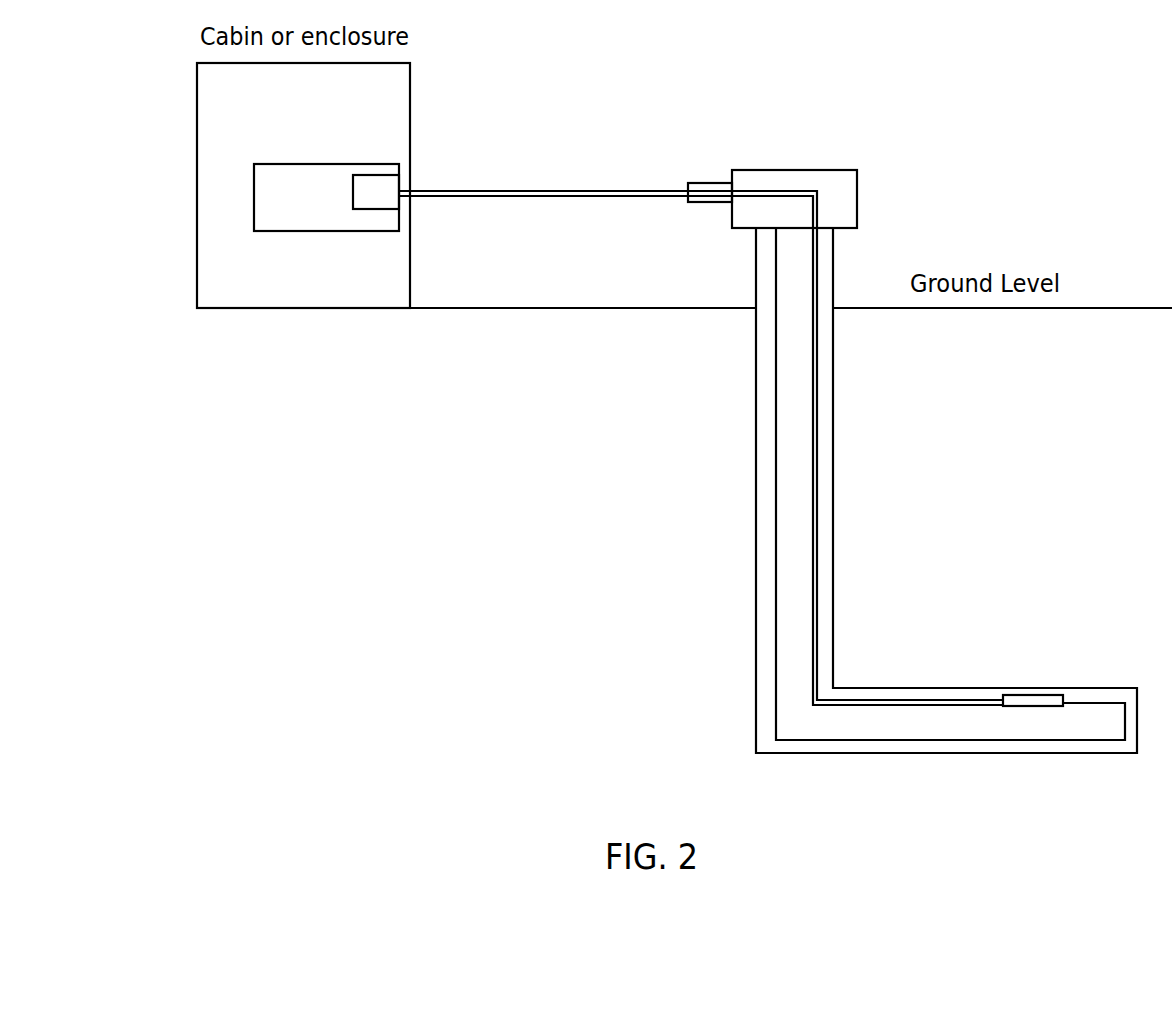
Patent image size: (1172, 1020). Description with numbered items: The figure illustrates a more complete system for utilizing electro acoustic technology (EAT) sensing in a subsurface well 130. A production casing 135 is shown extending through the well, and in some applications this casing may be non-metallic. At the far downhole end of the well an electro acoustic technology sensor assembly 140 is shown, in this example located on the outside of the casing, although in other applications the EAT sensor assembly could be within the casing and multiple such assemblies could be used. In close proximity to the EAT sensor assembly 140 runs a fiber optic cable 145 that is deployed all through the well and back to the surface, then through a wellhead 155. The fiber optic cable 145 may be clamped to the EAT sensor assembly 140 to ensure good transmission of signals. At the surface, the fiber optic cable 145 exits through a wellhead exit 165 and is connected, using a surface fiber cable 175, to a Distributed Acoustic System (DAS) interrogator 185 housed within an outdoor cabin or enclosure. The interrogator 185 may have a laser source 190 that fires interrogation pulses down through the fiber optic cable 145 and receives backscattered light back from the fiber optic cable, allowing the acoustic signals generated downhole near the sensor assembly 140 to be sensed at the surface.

The subsurface well 130 is at (757, 427).
The production casing 135 is at (783, 573).
The electro acoustic technology sensor assembly 140 is at (1033, 695).
The fiber optic cable 145 is at (813, 463).
The wellhead 155 is at (857, 183).
The wellhead exit 165 is at (703, 183).
The surface fiber cable 175 is at (528, 191).
The Distributed Acoustic System (DAS) interrogator 185 is at (283, 231).
The laser source 190 is at (376, 209).